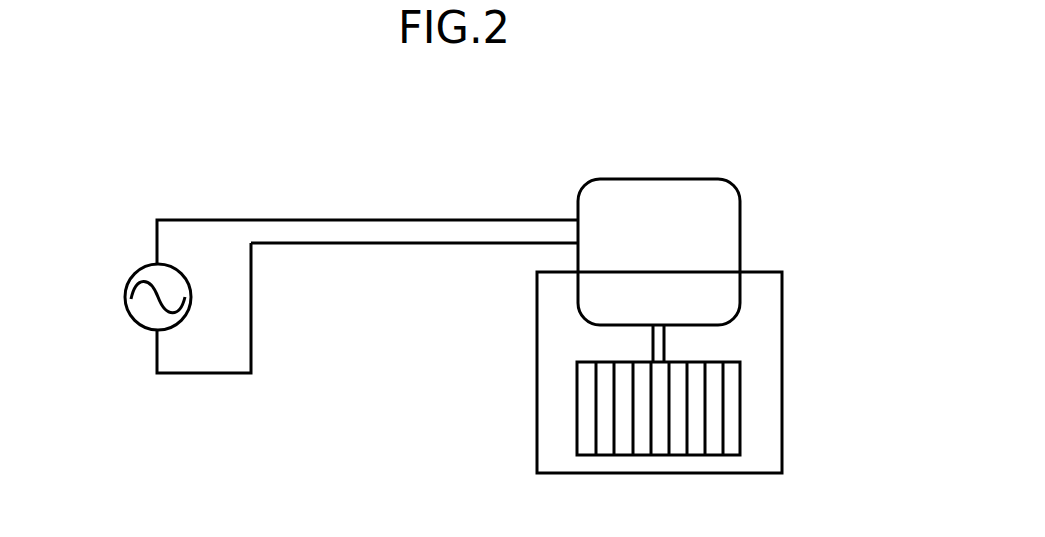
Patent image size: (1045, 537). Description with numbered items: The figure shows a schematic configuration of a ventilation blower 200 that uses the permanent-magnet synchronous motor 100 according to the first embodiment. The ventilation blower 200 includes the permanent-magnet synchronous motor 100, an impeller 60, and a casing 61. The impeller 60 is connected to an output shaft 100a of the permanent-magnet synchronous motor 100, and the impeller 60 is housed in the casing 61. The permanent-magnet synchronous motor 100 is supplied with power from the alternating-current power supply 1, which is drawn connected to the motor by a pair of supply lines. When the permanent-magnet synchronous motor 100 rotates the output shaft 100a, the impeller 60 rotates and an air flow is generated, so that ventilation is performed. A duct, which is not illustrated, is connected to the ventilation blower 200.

The ventilation blower 200 is at (799, 151).
The alternating-current power supply 1 is at (124, 297).
The permanent-magnet synchronous motor 100 is at (740, 226).
The output shaft 100a is at (665, 343).
The casing 61 is at (782, 332).
The impeller 60 is at (740, 407).